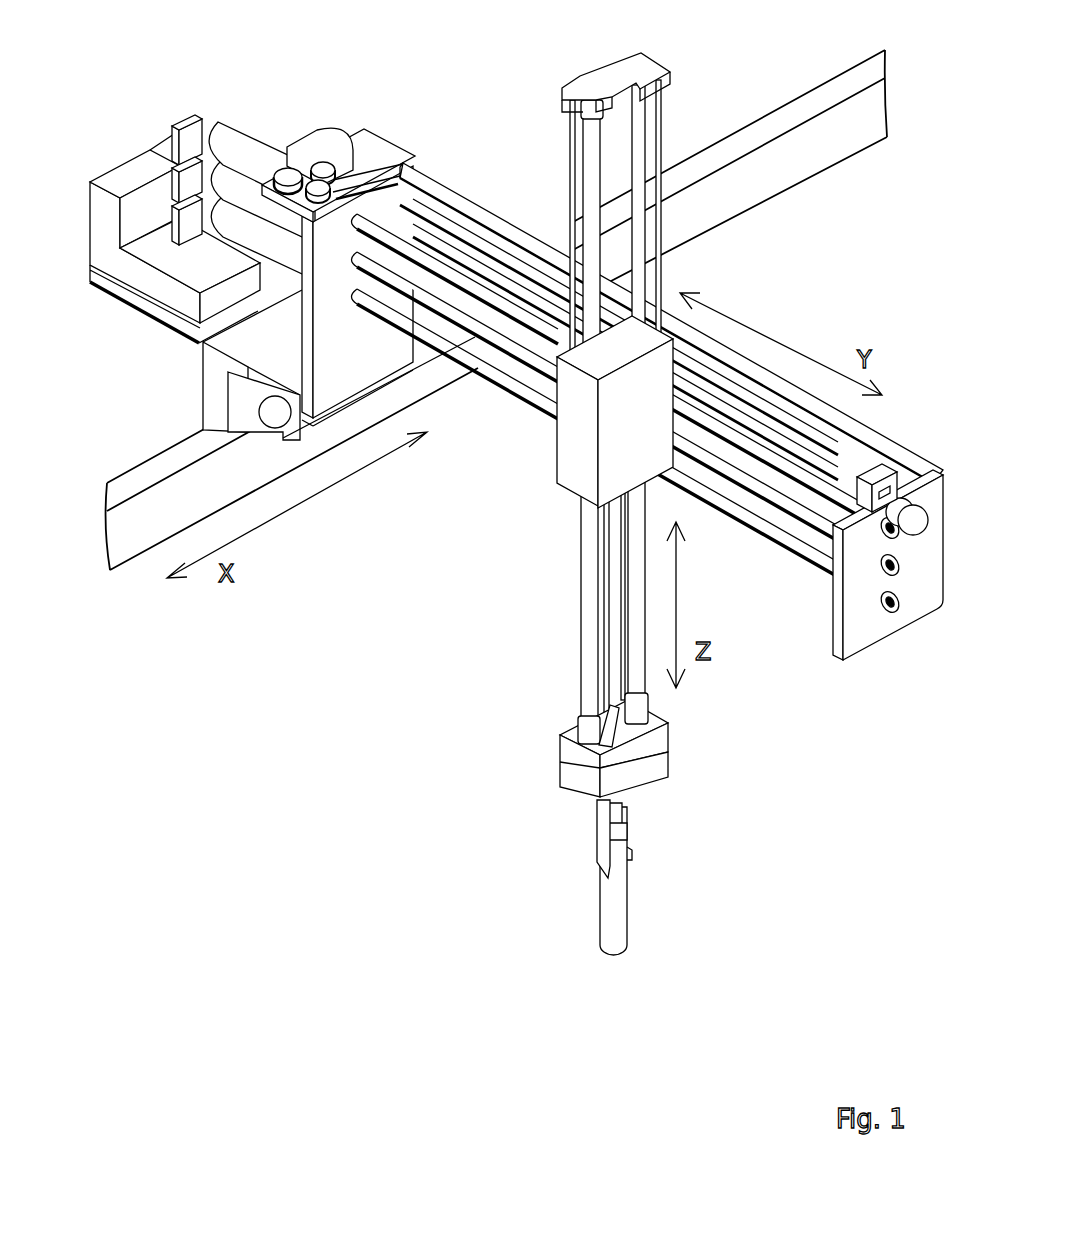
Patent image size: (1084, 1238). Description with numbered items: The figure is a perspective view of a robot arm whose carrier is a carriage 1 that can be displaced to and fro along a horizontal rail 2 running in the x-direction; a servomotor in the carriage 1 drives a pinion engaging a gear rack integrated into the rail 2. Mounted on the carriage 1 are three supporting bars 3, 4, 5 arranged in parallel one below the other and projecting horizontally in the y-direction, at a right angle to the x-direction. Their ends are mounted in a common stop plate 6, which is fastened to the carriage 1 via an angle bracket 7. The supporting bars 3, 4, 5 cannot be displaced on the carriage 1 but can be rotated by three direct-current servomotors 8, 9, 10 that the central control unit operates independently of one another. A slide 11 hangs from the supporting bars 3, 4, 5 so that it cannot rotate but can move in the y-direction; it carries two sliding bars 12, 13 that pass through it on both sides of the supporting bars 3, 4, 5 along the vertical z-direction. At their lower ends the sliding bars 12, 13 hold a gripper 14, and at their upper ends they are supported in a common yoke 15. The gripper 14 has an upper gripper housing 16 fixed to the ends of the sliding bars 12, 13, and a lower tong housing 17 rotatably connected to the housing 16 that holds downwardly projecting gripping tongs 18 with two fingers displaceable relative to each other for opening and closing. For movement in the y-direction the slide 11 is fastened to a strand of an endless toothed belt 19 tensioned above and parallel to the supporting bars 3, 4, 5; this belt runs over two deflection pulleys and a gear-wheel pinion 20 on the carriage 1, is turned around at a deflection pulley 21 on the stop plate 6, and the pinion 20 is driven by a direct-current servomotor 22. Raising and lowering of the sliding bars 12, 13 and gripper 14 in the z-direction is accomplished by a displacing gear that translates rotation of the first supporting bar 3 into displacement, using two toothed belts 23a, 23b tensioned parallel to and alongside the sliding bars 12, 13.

The carriage 1 is at (257, 108).
The rail 2 is at (793, 107).
The first supporting bar 3 is at (483, 330).
The supporting bar 4 is at (507, 317).
The supporting bar 5 is at (535, 398).
The stop plate 6 is at (855, 630).
The angle bracket 7 is at (433, 185).
The direct-current servomotor 8 is at (233, 187).
The direct-current servomotor 9 is at (233, 142).
The direct-current servomotor 10 is at (227, 220).
The slide 11 is at (578, 470).
The sliding bar 12 is at (637, 605).
The sliding bar 13 is at (590, 682).
The gripper 14 is at (548, 762).
The yoke 15 is at (613, 77).
The upper gripper housing 16 is at (657, 745).
The lower tong housing 17 is at (663, 767).
The gripping tongs 18 is at (602, 840).
The endless belt 19 is at (362, 183).
The pinion 20 is at (288, 173).
The deflection pulley 21 is at (880, 500).
The direct-current servomotor 22 is at (287, 260).
The belt 23a is at (663, 133).
The belt 23b is at (572, 143).